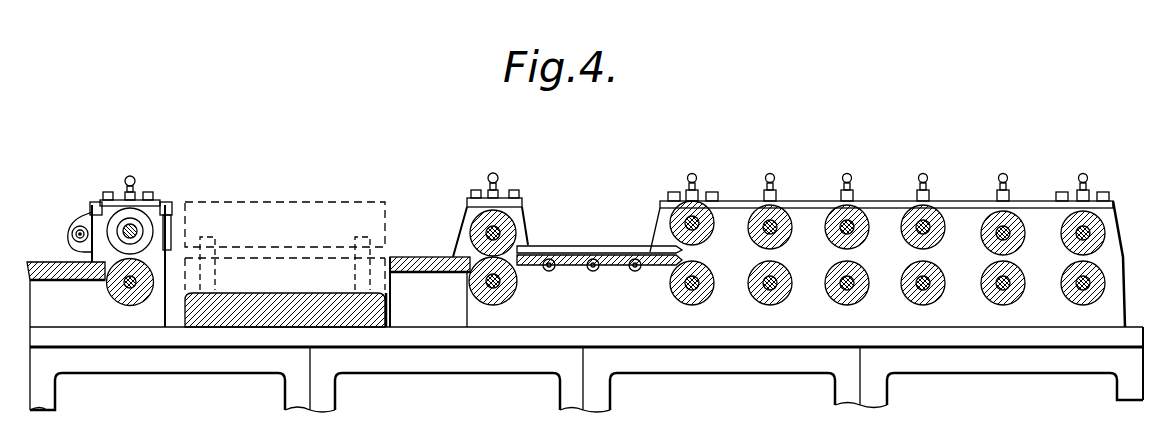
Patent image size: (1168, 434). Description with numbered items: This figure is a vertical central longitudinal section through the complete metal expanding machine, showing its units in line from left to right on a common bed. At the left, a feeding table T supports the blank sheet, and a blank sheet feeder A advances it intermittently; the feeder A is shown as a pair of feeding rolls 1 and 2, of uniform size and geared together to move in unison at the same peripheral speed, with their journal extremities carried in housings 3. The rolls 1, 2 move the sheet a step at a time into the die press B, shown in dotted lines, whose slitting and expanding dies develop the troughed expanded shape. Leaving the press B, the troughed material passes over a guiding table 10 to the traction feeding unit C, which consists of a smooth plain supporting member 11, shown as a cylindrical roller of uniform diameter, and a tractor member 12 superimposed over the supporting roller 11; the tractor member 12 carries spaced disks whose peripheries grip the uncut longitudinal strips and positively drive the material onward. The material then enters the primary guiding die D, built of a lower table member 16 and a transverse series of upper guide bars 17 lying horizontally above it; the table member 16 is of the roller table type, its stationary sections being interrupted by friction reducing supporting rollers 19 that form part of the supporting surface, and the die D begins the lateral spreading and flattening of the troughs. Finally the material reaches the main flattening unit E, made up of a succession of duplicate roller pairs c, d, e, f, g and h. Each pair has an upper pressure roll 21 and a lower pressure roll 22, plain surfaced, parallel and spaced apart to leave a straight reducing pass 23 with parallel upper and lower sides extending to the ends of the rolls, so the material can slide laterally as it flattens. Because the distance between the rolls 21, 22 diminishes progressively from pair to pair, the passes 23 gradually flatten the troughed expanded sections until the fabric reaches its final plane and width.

The feeding roll 1 is at (118, 222).
The feeding roll 2 is at (100, 292).
The housings 3 is at (160, 208).
The guiding table 10 is at (412, 276).
The supporting member 11 is at (515, 291).
The tractor member 12 is at (468, 224).
The lower table member 16 is at (655, 268).
The upper guide bars 17 is at (588, 246).
The supporting rollers 19 is at (553, 270).
The upper pressure roll 21 is at (748, 227).
The lower pressure roll 22 is at (748, 284).
The straight reducing pass 23 is at (760, 258).
The feeding table T is at (33, 262).
The blank sheet feeder A is at (120, 235).
The die press B is at (285, 235).
The traction feeding unit C is at (490, 198).
The primary guiding die D is at (603, 155).
The main flattening unit E is at (887, 233).
The roller pair c is at (692, 181).
The roller pair d is at (770, 180).
The roller pair e is at (847, 181).
The roller pair f is at (923, 180).
The roller pair g is at (1003, 181).
The roller pair h is at (1083, 180).